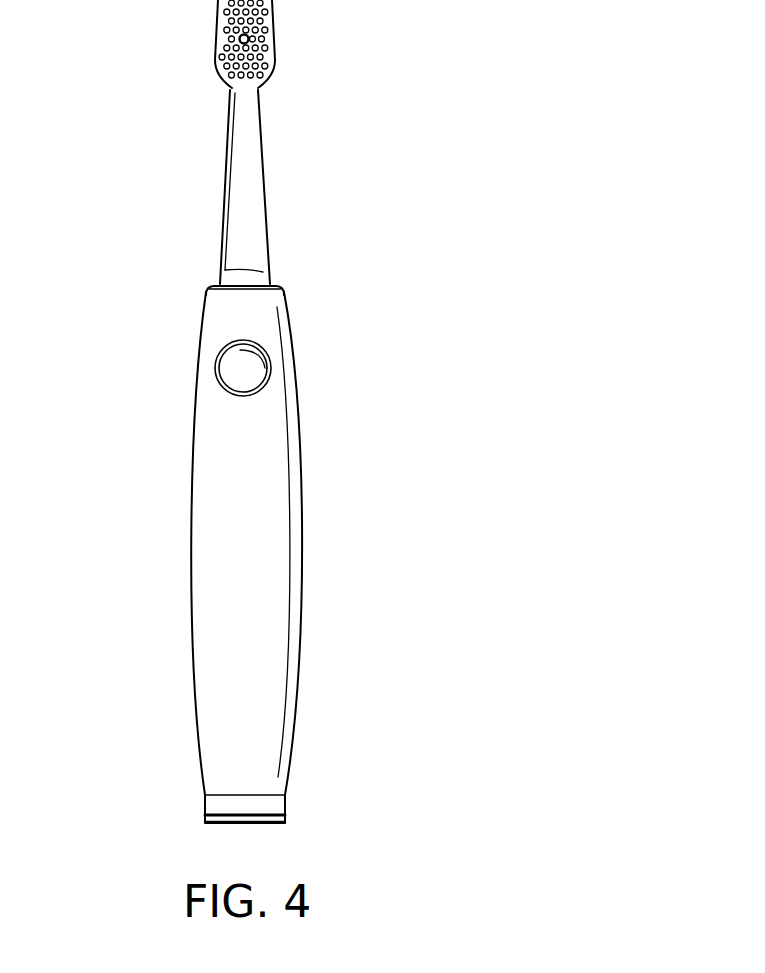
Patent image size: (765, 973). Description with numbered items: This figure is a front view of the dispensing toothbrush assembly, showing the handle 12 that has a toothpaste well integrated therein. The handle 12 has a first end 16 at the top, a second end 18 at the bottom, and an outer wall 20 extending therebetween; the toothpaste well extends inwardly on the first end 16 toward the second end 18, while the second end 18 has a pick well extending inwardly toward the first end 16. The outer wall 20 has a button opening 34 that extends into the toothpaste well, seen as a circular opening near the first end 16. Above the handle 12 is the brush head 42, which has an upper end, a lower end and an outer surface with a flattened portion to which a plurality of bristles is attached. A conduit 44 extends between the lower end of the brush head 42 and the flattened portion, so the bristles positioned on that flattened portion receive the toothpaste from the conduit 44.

The handle 12 is at (190, 430).
The first end 16 is at (217, 284).
The second end 18 is at (222, 796).
The outer wall 20 is at (268, 533).
The button opening 34 is at (265, 388).
The brush head 42 is at (298, 113).
The conduit 44 is at (248, 38).